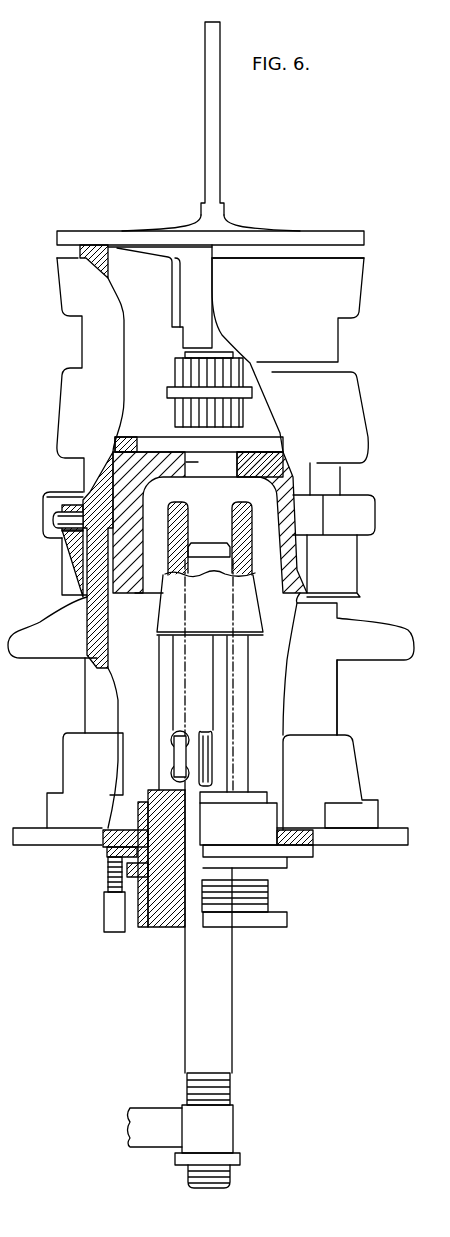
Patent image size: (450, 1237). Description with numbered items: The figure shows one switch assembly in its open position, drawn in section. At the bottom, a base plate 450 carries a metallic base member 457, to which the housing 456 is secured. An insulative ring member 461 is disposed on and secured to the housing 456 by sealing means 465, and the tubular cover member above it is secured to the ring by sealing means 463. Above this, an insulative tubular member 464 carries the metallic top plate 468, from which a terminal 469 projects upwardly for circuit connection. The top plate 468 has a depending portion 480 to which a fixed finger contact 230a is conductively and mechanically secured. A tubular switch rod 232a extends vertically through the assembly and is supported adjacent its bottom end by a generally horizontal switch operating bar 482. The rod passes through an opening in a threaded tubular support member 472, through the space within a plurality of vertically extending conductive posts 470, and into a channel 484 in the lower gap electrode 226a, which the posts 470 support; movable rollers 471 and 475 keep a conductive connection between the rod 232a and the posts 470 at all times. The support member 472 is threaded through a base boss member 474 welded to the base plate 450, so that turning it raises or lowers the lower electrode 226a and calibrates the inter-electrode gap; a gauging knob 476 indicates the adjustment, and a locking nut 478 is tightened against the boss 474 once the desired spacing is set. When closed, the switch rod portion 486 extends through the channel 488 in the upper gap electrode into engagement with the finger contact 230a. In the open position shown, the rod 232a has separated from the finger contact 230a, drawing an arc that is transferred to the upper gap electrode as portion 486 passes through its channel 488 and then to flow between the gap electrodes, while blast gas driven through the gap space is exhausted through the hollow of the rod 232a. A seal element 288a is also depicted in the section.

The terminal 469 is at (218, 137).
The top plate 468 is at (335, 231).
The depending portion 480 is at (178, 282).
The insulative tubular member 464 is at (333, 345).
The finger contact 230a is at (178, 355).
The channel 488 is at (240, 450).
The seal ring 288a is at (250, 462).
The lower gap electrode 226a is at (247, 561).
The channel 484 is at (190, 513).
The switch rod portion 486 is at (200, 557).
The insulative ring member 461 is at (375, 518).
The sealing means 465 is at (50, 512).
The sealing means 463 is at (62, 548).
The housing 456 is at (383, 634).
The conductive posts 470 is at (162, 644).
The movable roller 471 is at (166, 740).
The metallic base member 457 is at (358, 764).
The base plate 450 is at (45, 838).
The threaded base boss member 474 is at (108, 852).
The locking nut 478 is at (108, 886).
The gauging knob 476 is at (104, 917).
The switch rod 232a is at (228, 965).
The movable roller 475 is at (212, 790).
The threaded tubular support member 472 is at (270, 797).
The switch operating bar 482 is at (145, 1115).